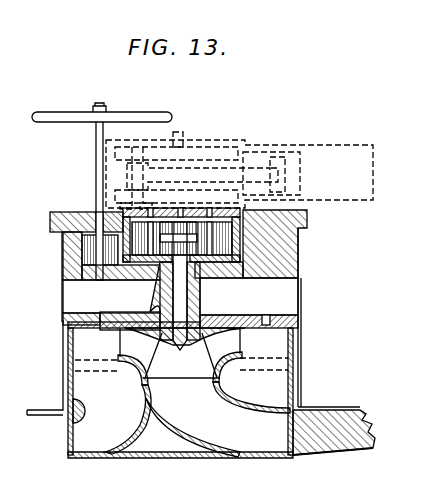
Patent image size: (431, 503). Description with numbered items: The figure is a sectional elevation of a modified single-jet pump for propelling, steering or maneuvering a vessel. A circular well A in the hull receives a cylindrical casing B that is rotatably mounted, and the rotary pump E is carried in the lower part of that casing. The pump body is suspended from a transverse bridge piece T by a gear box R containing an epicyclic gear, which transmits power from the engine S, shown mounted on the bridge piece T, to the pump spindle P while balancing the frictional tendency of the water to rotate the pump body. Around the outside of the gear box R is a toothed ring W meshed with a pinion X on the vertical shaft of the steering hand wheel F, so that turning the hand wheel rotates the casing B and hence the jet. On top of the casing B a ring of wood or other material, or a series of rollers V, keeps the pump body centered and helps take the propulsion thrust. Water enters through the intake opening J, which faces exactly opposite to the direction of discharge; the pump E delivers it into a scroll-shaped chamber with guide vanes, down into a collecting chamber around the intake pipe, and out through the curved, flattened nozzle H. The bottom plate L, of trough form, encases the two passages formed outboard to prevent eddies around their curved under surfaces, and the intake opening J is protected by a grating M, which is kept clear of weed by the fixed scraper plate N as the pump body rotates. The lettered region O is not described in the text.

The hand wheel F is at (62, 112).
The engine S is at (270, 143).
The gear box R is at (108, 185).
The pinion X is at (83, 253).
The transverse bridge piece T is at (287, 244).
The well A is at (62, 299).
The pump spindle P is at (188, 297).
The toothed ring W is at (249, 296).
The ring or series of rollers V is at (299, 314).
The pump E is at (83, 347).
The cylindrical casing B is at (293, 341).
The nozzle lips O is at (228, 340).
The curved nozzle H is at (73, 436).
The bottom plate L is at (152, 442).
The intake opening J is at (258, 443).
The grating M is at (300, 452).
The scraper plate N is at (350, 450).